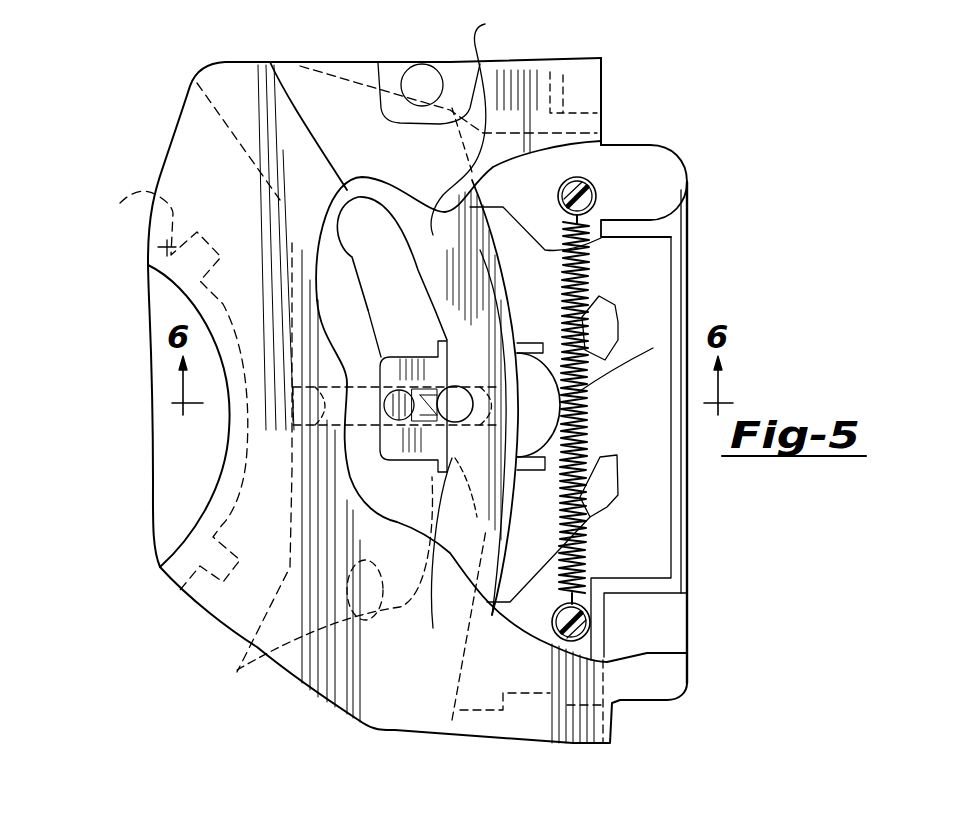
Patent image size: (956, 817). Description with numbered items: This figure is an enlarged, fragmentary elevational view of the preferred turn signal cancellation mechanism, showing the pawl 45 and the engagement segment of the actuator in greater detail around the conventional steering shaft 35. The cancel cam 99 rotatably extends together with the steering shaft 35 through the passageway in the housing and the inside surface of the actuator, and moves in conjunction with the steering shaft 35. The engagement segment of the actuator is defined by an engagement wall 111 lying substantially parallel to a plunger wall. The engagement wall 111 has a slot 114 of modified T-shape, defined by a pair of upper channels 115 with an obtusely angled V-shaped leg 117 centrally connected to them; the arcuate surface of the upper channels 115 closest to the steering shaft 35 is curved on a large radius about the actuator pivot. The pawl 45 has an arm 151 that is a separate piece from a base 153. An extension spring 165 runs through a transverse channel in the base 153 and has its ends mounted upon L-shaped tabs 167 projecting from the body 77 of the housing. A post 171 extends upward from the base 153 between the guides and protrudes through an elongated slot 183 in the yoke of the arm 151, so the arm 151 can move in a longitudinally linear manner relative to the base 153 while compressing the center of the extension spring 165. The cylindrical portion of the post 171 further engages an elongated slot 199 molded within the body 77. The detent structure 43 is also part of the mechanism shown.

The steering shaft 35 is at (177, 498).
The detent structure 43 is at (683, 552).
The pawl 45 is at (630, 302).
The body portion 77 is at (355, 70).
The cancel cam 99 is at (174, 390).
The engagement wall 111 is at (474, 125).
The slot 114 is at (410, 250).
The upper channels 115 is at (270, 62).
The V-shaped leg 117 is at (458, 335).
The arm 151 is at (397, 440).
The base 153 is at (648, 345).
The extension spring 165 is at (677, 229).
The L-shaped tabs 167 is at (586, 180).
The post 171 is at (453, 401).
The elongated slot 183 is at (492, 412).
The elongated slot 199 is at (481, 503).